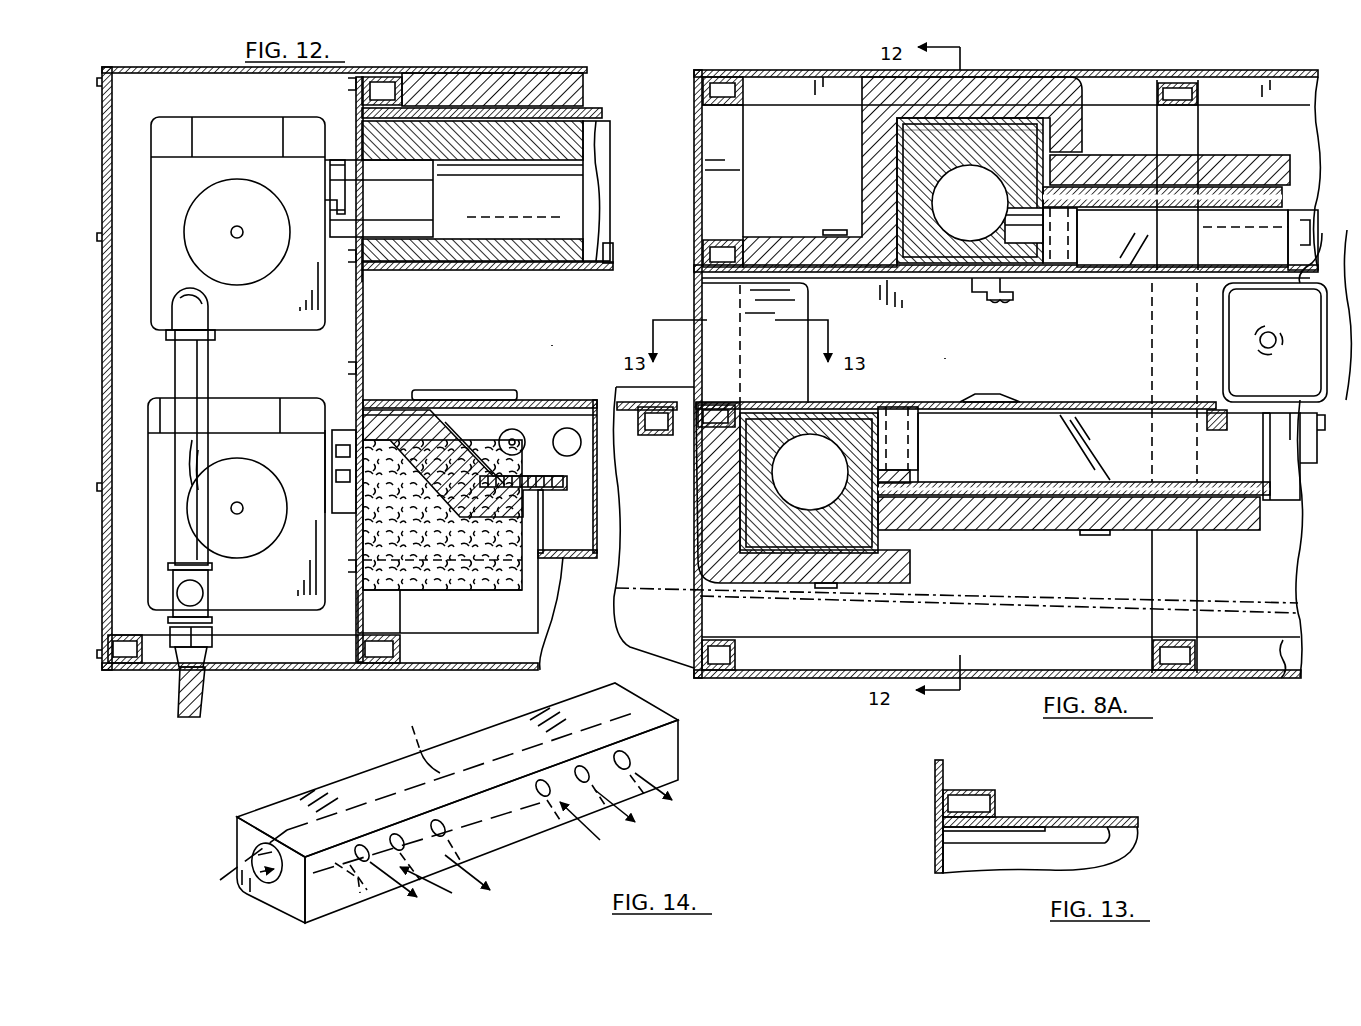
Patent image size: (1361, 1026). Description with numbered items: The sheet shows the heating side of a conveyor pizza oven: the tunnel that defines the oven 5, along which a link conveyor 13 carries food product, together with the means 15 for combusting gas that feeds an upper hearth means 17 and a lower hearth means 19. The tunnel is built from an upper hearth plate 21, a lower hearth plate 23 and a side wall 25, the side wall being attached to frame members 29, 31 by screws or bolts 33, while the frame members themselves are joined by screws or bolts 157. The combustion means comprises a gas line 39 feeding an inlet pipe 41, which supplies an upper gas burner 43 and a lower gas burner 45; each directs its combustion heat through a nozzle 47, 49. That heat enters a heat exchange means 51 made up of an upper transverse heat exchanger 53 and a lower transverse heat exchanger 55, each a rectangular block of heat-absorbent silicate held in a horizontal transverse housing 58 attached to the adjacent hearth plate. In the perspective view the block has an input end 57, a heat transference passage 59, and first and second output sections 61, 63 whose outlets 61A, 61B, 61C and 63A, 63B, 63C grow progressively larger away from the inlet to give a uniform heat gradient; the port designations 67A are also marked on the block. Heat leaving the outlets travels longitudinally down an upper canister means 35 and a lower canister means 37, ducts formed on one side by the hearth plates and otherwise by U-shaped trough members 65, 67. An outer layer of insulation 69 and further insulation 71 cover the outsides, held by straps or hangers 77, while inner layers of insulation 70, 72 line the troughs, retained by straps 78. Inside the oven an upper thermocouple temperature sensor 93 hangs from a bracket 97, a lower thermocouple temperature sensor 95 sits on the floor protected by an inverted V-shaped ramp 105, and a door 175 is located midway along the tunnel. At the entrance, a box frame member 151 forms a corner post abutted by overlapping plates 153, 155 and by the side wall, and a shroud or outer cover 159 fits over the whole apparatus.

In FIG. 12, the oven 5 is at (562, 340).
In FIG. 12, the link conveyor 13 is at (492, 396).
In FIG. 12, the means for combusting gas 15 is at (133, 373).
In FIG. 12, the upper hearth means 17 is at (473, 276).
In FIG. 12, the lower hearth means 19 is at (550, 398).
In FIG. 12, the upper hearth plate 21 is at (584, 270).
In FIG. 8A, the upper hearth plate 21 is at (1115, 277).
In FIG. 12, the lower hearth plate 23 is at (425, 440).
In FIG. 8A, the lower hearth plate 23 is at (1057, 403).
In FIG. 13, the lower hearth plate 23 is at (1010, 866).
In FIG. 8A, the side wall 25 is at (951, 355).
In FIG. 13, the side wall 25 is at (1060, 816).
In FIG. 12, the frame member 29 is at (358, 270).
In FIG. 12, the frame member 31 is at (356, 405).
In FIG. 12, the screws or bolts 33 is at (358, 295).
In FIG. 8A, the upper canister means 35 is at (1129, 243).
In FIG. 8A, the lower canister means 37 is at (1014, 461).
In FIG. 12, the gas line 39 is at (178, 690).
In FIG. 12, the inlet pipe 41 is at (200, 380).
In FIG. 12, the upper gas burner 43 is at (255, 326).
In FIG. 12, the lower gas burner 45 is at (152, 520).
In FIG. 12, the nozzle 47 is at (428, 202).
In FIG. 12, the nozzle 49 is at (442, 515).
In FIG. 12, the heat exchange means 51 is at (588, 146).
In FIG. 8A, the heat exchange means 51 is at (997, 140).
In FIG. 14, the heat exchange means 51 is at (300, 771).
In FIG. 12, the upper transverse heat exchanger 53 is at (604, 172).
In FIG. 8A, the upper transverse heat exchanger 53 is at (890, 163).
In FIG. 12, the lower transverse heat exchanger 55 is at (562, 565).
In FIG. 8A, the lower transverse heat exchanger 55 is at (927, 531).
In FIG. 14, the input end 57 is at (253, 882).
In FIG. 8A, the horizontal transverse housing 58 is at (890, 148).
In FIG. 12, the heat transference passage 59 is at (575, 200).
In FIG. 8A, the heat transference passage 59 is at (976, 215).
In FIG. 14, the heat transference passage 59 is at (420, 736).
In FIG. 12, the first output section 61 is at (536, 432).
In FIG. 8A, the first output section 61 is at (1062, 250).
In FIG. 14, the first output section 61 is at (452, 893).
In FIG. 12, the outlet 61A is at (512, 430).
In FIG. 14, the outlet 61A is at (363, 845).
In FIG. 12, the outlet 61B is at (567, 428).
In FIG. 14, the outlet 61B is at (397, 834).
In FIG. 14, the outlet 61C is at (438, 819).
In FIG. 14, the second output section 63 is at (605, 838).
In FIG. 14, the outlet 63A is at (543, 780).
In FIG. 14, the outlet 63B is at (582, 765).
In FIG. 8A, the outlet 63C is at (620, 680).
In FIG. 14, the outlet 63C is at (622, 752).
In FIG. 8A, the trough member 65 is at (1287, 214).
In FIG. 8A, the trough member 67 is at (1273, 473).
In FIG. 14, the trough member 67 is at (360, 893).
In FIG. 14, the port 67A is at (640, 795).
In FIG. 12, the outer layer of insulation 69 is at (583, 92).
In FIG. 8A, the outer layer of insulation 69 is at (1287, 164).
In FIG. 8A, the inner layer of insulation 70 is at (1230, 197).
In FIG. 12, the insulation 71 is at (439, 585).
In FIG. 8A, the insulation 71 is at (1243, 530).
In FIG. 8A, the inner layer of insulation 72 is at (1023, 530).
In FIG. 8A, the straps or hangers 77 is at (833, 230).
In FIG. 8A, the straps 78 is at (1240, 477).
In FIG. 8A, the upper thermocouple temperature sensor 93 is at (1007, 305).
In FIG. 8A, the lower thermocouple temperature sensor 95 is at (990, 395).
In FIG. 8A, the bracket 97 is at (987, 297).
In FIG. 8A, the inverted V-shaped ramp 105 is at (980, 397).
In FIG. 8A, the box frame member 151 is at (733, 148).
In FIG. 13, the box frame member 151 is at (980, 790).
In FIG. 8A, the plate 153 is at (694, 296).
In FIG. 13, the plate 153 is at (933, 778).
In FIG. 8A, the plate 155 is at (798, 301).
In FIG. 13, the plate 155 is at (975, 835).
In FIG. 12, the screws or bolts 157 is at (100, 84).
In FIG. 12, the shroud or outer cover 159 is at (462, 73).
In FIG. 8A, the shroud or outer cover 159 is at (1238, 680).
In FIG. 8A, the door 175 is at (1325, 430).